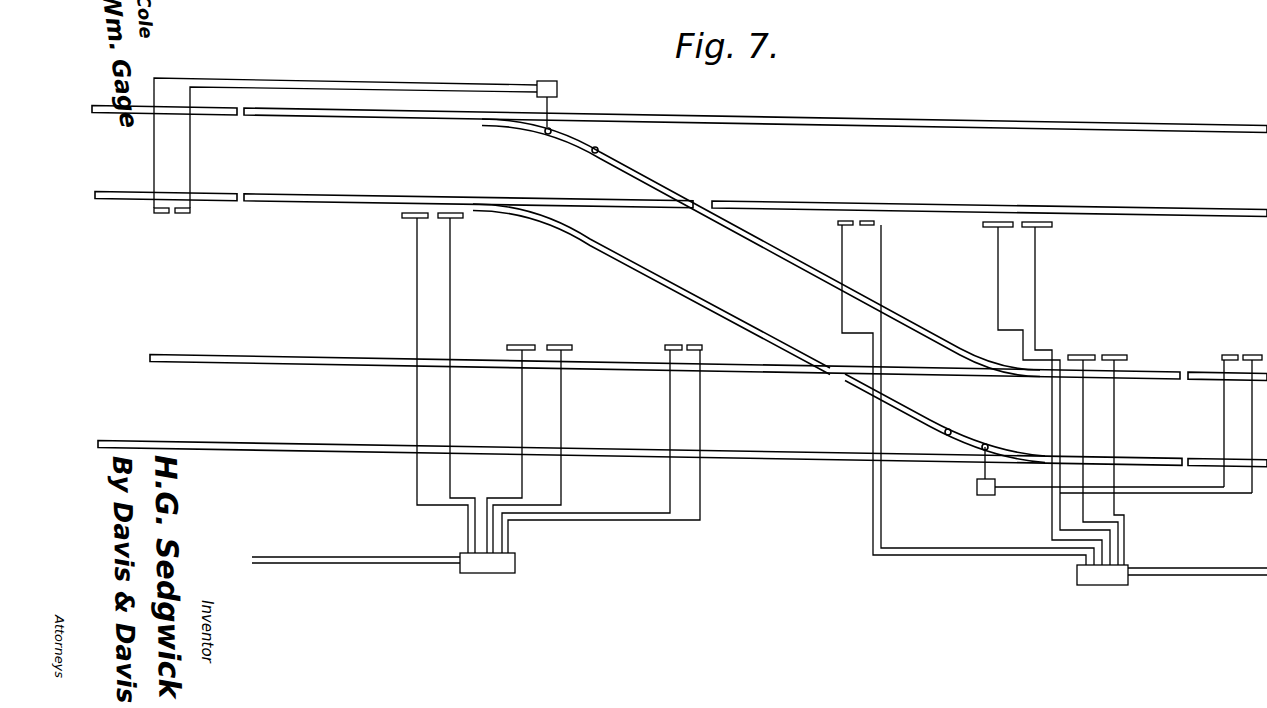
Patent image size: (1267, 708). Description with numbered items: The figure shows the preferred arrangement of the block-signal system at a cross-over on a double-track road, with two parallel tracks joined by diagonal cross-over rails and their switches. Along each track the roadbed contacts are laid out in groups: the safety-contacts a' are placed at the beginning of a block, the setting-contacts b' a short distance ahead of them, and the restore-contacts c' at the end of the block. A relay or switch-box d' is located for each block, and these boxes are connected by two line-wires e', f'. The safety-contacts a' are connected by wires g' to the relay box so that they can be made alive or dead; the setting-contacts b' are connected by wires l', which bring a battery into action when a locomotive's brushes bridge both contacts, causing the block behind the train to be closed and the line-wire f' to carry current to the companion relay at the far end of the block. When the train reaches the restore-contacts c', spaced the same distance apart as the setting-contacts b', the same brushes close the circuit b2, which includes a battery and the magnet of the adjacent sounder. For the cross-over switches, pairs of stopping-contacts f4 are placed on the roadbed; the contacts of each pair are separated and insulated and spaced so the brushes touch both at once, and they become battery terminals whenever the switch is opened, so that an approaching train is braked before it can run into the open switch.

The stopping-contacts f4 is at (178, 207).
The restore-contacts c' is at (764, 265).
The circuit b2 is at (417, 266).
The setting-contacts b' is at (779, 260).
The wires l' is at (798, 396).
The safety-contacts a' is at (770, 259).
The wires g' is at (798, 395).
The relay or switch-box d' is at (794, 584).
The line-wire e' is at (759, 553).
The line-wire f' is at (759, 586).